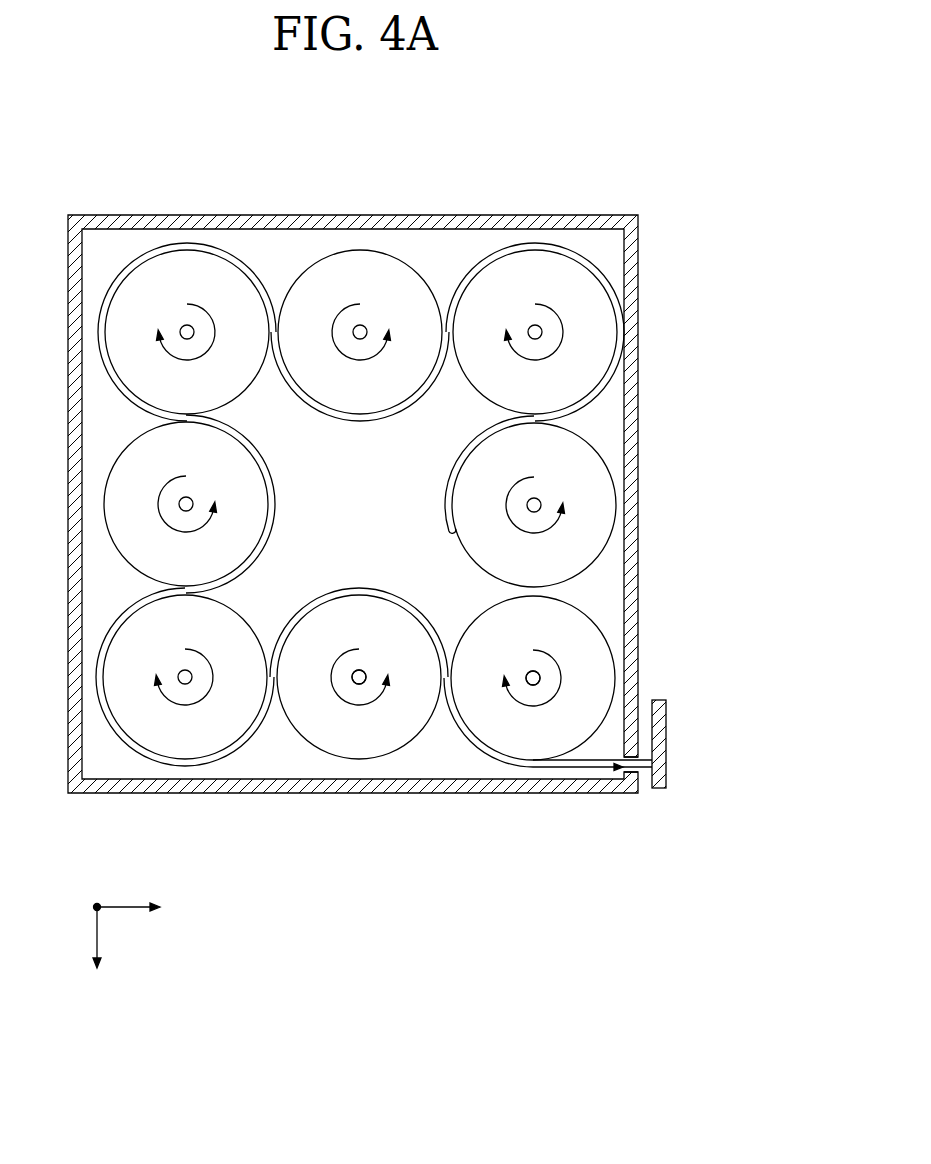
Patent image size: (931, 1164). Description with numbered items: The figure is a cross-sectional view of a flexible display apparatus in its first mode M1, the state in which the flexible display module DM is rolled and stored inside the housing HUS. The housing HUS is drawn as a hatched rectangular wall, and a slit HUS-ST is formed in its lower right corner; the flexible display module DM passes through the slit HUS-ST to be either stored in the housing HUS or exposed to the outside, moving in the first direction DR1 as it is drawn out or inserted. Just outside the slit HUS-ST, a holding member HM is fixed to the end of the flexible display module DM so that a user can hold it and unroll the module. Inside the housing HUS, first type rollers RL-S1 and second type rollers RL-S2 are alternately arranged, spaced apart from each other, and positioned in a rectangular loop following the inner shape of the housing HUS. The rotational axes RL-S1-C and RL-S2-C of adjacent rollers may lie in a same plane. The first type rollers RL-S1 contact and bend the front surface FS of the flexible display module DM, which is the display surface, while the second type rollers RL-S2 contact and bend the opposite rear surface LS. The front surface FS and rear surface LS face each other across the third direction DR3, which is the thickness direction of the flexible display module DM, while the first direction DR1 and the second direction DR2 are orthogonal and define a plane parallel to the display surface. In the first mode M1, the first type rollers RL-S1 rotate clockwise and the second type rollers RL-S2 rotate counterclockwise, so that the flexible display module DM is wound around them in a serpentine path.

The first mode M1 is at (612, 158).
The housing HUS is at (477, 216).
The slit HUS-ST is at (608, 770).
The first type rollers RL-S1 is at (510, 738).
The rotational axis of first type roller RL-S1-C is at (540, 673).
The second type rollers RL-S2 is at (303, 722).
The rotational axis of second type roller RL-S2-C is at (358, 684).
The flexible display module DM is at (560, 880).
The rear surface LS is at (560, 769).
The front surface FS is at (592, 756).
The holding member HM is at (666, 724).
The first direction DR1 is at (146, 907).
The second direction DR2 is at (76, 907).
The third direction DR3 is at (97, 951).